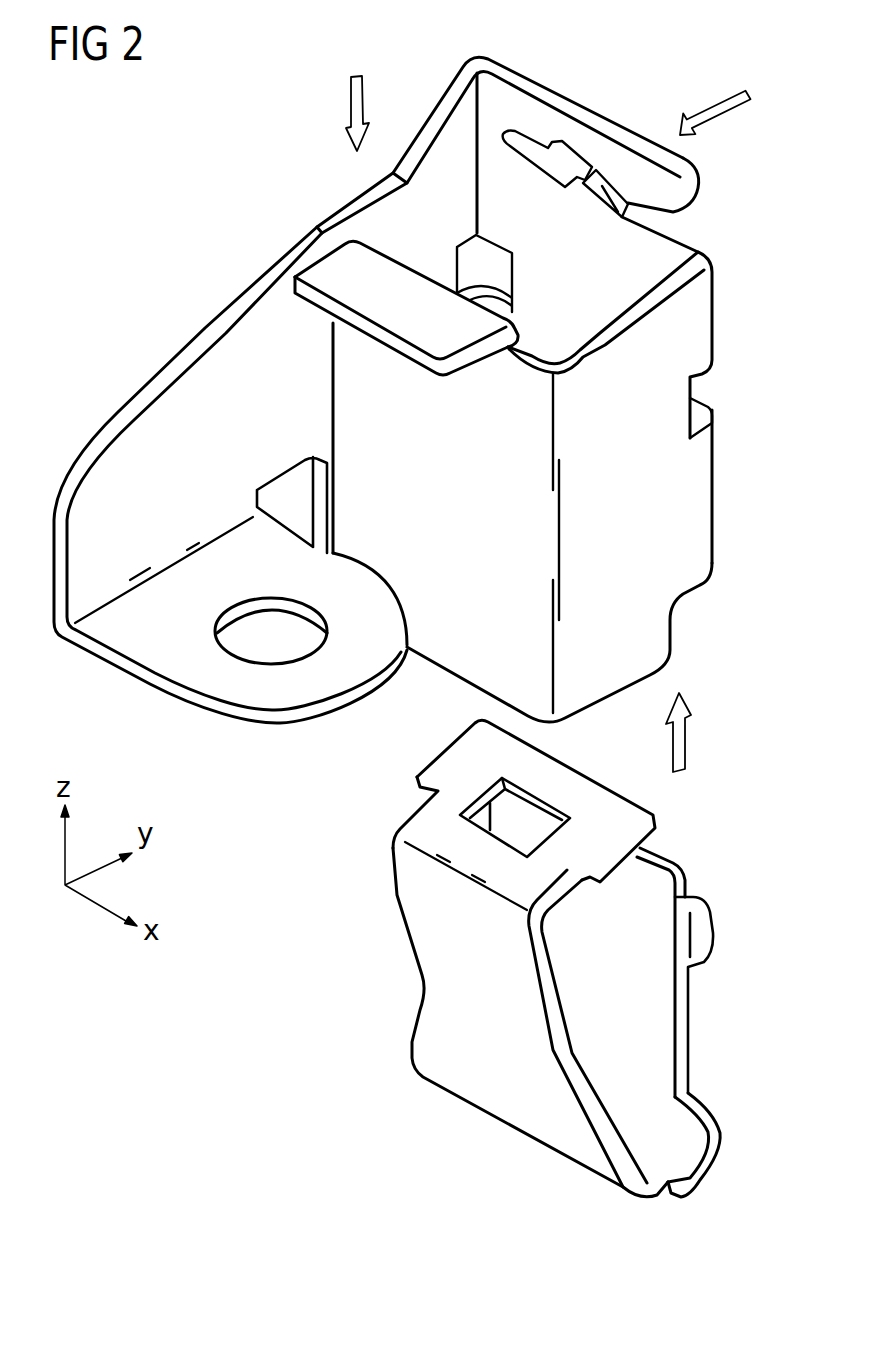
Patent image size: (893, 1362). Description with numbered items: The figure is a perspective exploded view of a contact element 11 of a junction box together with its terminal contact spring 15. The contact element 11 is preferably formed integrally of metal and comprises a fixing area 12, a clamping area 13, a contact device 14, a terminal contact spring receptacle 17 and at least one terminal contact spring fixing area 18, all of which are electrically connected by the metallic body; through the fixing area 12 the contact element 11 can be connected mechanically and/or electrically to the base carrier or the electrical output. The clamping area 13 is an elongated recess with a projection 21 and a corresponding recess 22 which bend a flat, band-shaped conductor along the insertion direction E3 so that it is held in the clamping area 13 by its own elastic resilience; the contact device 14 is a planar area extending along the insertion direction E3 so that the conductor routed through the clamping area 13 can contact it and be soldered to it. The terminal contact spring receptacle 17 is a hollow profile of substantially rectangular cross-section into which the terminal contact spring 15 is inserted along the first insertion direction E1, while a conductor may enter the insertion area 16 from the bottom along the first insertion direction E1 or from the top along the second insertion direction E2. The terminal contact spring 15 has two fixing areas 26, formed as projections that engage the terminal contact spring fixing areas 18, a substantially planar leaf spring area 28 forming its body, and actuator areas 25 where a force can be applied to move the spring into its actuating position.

The contact element 11 is at (162, 252).
The fixing area 12 is at (157, 659).
The clamping area 13 is at (711, 209).
The contact device 14 is at (420, 325).
The terminal contact spring 15 is at (352, 915).
The insertion area 16 is at (555, 318).
The terminal contact spring receptacle 17 is at (640, 304).
The terminal contact spring fixing area 18 is at (703, 412).
The projection 21 is at (603, 182).
The recess 22 is at (573, 152).
The actuator area 25 is at (414, 794).
The fixing area 26 is at (698, 896).
The leaf spring area 28 is at (555, 1015).
The first insertion direction E1 is at (690, 740).
The second insertion direction E2 is at (350, 103).
The insertion direction E3 is at (720, 108).